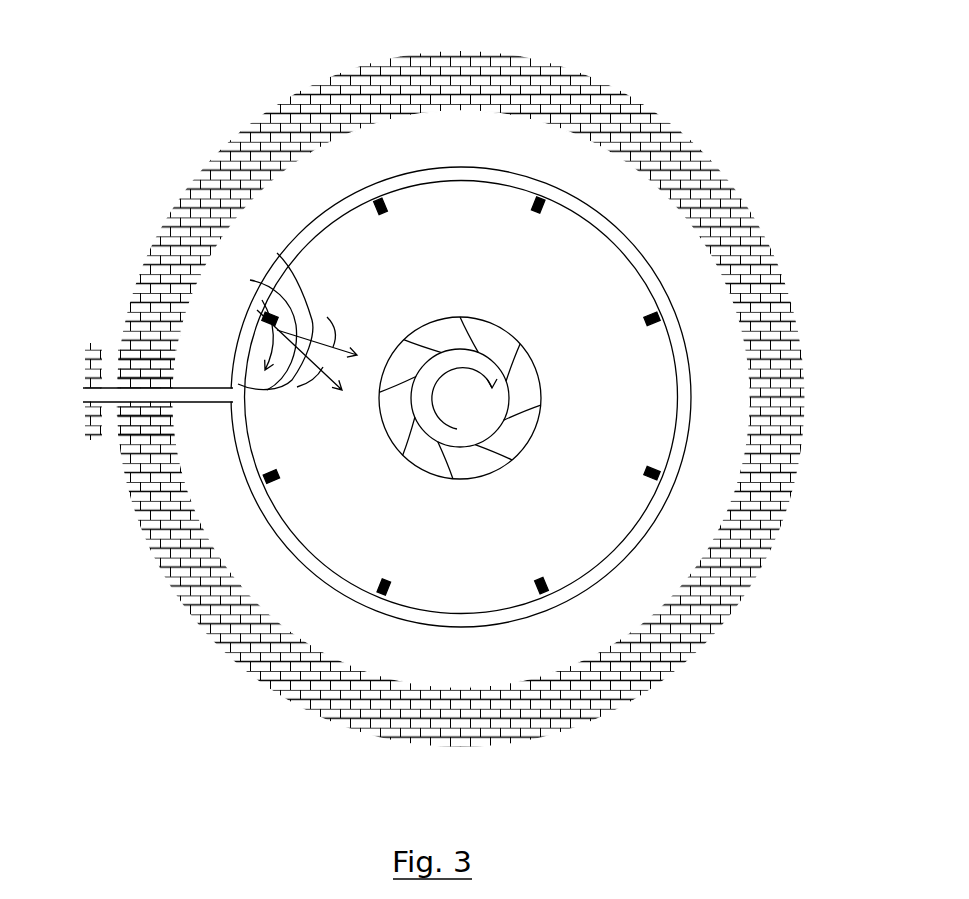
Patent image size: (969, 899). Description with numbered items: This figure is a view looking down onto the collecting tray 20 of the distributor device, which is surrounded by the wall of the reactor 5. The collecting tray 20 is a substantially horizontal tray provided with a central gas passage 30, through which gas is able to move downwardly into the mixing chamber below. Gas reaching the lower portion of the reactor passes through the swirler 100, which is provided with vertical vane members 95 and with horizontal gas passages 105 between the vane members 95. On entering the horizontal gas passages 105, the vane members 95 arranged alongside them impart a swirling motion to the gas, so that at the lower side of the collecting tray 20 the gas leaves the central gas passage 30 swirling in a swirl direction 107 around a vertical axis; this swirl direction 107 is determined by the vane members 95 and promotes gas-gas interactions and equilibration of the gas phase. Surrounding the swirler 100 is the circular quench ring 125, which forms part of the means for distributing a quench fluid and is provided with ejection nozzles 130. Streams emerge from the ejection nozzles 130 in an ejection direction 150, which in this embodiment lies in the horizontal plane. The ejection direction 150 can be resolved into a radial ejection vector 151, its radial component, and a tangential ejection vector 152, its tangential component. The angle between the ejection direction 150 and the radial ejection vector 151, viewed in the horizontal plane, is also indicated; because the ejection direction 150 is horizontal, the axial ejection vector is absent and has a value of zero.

The reactor wall 5 is at (720, 190).
The collecting tray 20 is at (711, 472).
The central gas passage 30 is at (522, 440).
The vane members 95 is at (503, 327).
The swirler 100 is at (507, 410).
The horizontal gas passages 105 is at (450, 332).
The swirl direction 107 is at (425, 323).
The quench ring 125 is at (647, 258).
The ejection nozzles 130 is at (673, 348).
The ejection direction 150 is at (247, 385).
The radial ejection vector 151 is at (250, 280).
The tangential ejection vector 152 is at (255, 325).